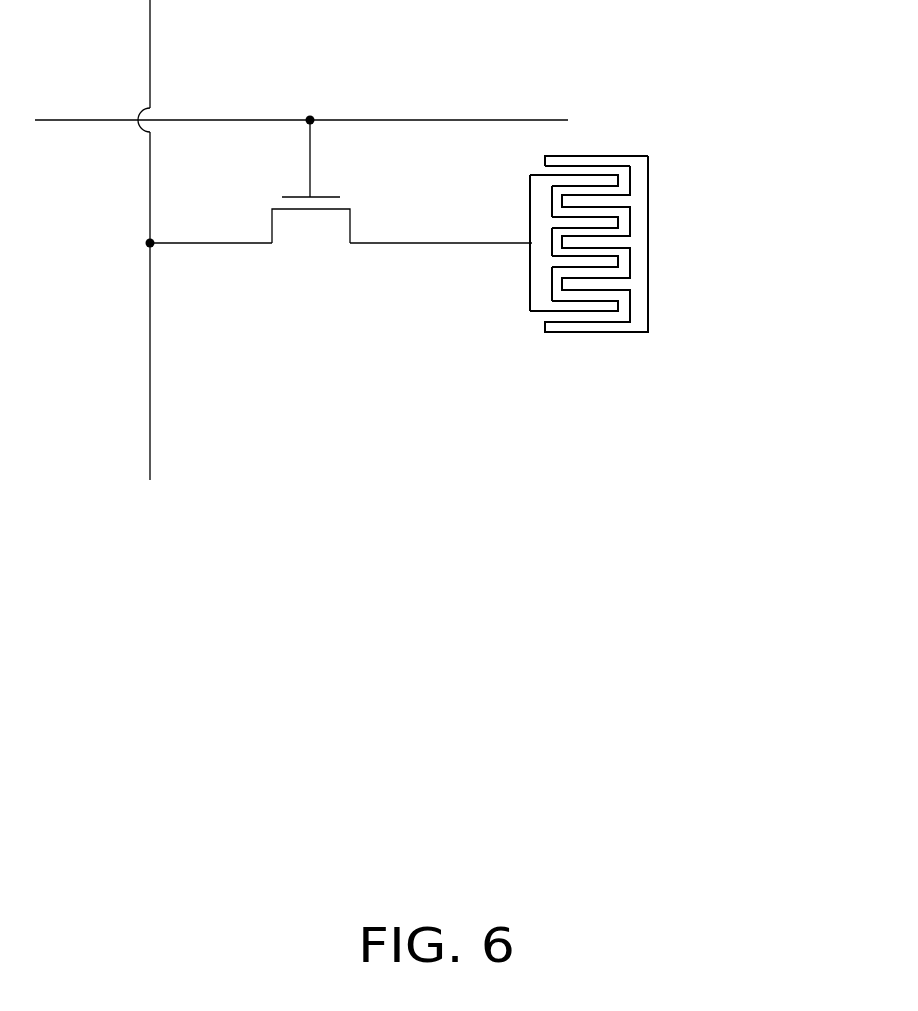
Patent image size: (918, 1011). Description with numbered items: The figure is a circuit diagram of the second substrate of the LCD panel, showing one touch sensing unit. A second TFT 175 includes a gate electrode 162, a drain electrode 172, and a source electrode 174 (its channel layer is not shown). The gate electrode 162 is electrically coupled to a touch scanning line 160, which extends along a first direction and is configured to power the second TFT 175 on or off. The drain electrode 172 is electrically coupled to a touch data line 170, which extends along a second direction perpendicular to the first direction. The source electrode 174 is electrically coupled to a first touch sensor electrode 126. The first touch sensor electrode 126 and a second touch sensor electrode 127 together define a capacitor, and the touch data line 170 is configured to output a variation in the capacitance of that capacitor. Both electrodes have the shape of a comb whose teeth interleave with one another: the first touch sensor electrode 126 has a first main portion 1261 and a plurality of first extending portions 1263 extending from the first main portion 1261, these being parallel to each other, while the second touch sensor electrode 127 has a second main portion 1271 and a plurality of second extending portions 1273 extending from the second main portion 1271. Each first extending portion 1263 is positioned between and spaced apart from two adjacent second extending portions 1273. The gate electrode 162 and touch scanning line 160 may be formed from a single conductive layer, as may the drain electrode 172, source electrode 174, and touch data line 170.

The touch scanning line 160 is at (488, 120).
The touch data line 170 is at (150, 395).
The gate electrode 162 is at (340, 197).
The second TFT 175 is at (266, 198).
The drain electrode 172 is at (227, 243).
The source electrode 174 is at (387, 243).
The first touch sensor electrode 126 is at (536, 312).
The first main portion 1261 is at (540, 288).
The first extending portions 1263 is at (585, 303).
The second touch sensor electrode 127 is at (687, 216).
The second main portion 1271 is at (637, 213).
The second extending portions 1273 is at (598, 160).